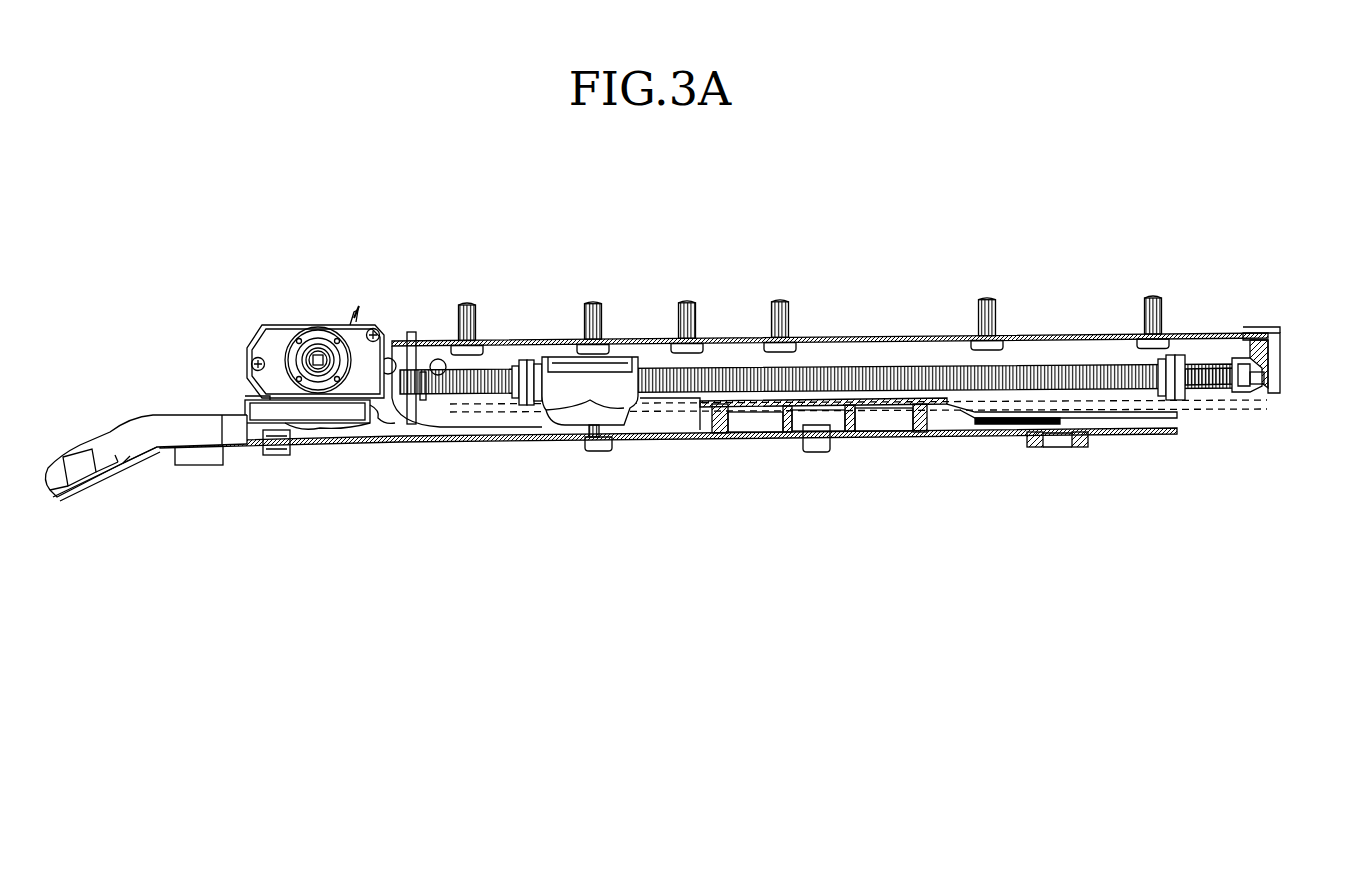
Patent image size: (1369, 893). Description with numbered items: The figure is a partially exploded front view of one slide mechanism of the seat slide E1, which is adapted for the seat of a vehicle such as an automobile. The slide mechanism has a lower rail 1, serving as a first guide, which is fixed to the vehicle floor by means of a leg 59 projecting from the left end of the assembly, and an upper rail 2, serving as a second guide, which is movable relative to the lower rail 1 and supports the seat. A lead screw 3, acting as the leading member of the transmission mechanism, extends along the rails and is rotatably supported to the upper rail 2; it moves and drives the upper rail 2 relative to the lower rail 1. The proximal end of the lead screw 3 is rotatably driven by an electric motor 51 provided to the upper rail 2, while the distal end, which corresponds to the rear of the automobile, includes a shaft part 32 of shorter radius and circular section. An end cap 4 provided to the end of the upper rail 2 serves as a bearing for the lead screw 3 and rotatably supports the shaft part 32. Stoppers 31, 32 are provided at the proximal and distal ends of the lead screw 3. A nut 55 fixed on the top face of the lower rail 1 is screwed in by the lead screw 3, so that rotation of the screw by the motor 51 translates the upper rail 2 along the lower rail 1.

The lower rail 1 is at (1104, 440).
The upper rail 2 is at (1225, 333).
The lead screw 3 is at (1070, 368).
The end cap 4 is at (1279, 352).
The stopper 31 is at (1177, 400).
The shaft part 32 is at (521, 364).
The electric motor 51 is at (268, 330).
The nut 55 is at (556, 357).
The leg 59 is at (150, 457).
The seat slide E1 is at (1272, 277).